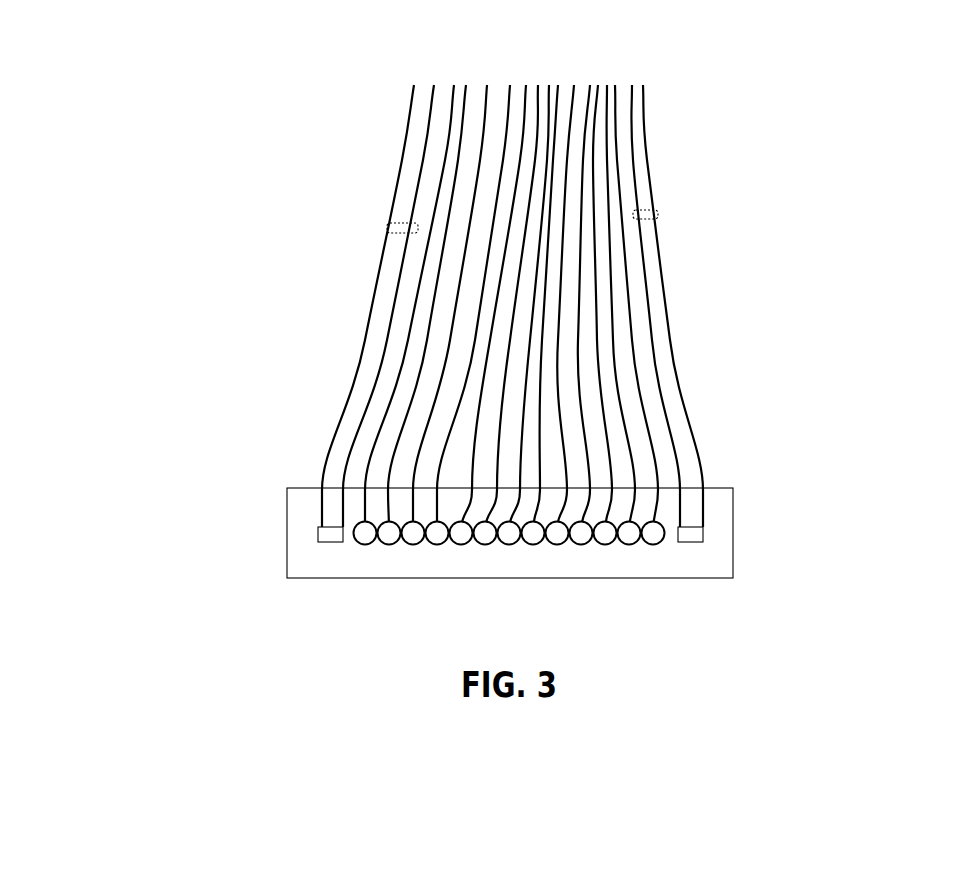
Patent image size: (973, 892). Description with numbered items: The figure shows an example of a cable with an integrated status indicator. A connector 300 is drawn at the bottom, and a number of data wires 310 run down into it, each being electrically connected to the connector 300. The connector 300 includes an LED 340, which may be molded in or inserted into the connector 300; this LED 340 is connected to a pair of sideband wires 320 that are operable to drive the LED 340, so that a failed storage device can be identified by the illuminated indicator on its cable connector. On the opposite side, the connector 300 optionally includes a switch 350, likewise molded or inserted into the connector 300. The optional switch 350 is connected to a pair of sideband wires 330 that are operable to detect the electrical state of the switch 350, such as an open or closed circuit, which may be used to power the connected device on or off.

The connector 300 is at (752, 569).
The data wires 310 is at (509, 298).
The sideband wires 320 is at (662, 177).
The sideband wires 330 is at (340, 384).
The LED 340 is at (712, 522).
The switch 350 is at (310, 522).